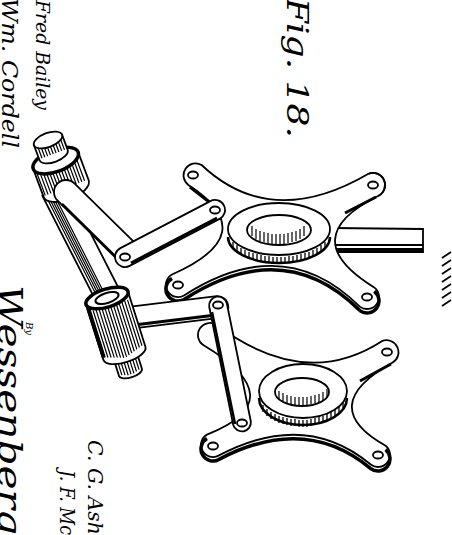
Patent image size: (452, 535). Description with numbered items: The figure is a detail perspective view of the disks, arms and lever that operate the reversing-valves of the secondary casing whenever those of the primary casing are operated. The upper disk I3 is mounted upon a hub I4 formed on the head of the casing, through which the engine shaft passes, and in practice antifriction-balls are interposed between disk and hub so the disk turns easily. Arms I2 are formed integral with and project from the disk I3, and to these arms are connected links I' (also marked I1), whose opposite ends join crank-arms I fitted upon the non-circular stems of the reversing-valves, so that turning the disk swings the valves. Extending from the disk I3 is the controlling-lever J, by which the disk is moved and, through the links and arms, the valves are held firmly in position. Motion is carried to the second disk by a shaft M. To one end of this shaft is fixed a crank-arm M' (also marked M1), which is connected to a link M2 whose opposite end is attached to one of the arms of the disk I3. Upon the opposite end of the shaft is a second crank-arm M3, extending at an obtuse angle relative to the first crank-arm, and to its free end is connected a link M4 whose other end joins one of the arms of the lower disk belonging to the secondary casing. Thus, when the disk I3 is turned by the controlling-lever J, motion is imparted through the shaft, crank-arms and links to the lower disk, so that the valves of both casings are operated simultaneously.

The shaft M is at (88, 254).
The crank-arm M' is at (96, 220).
The crank-arm M1 is at (124, 248).
The link M2 is at (182, 222).
The second crank-arm M3 is at (167, 325).
The link M4 is at (222, 350).
The crank-arm I is at (275, 228).
The link I' is at (275, 228).
The link I1 is at (275, 228).
The arm I2 is at (355, 190).
The disk I3 is at (271, 210).
The hub I4 is at (305, 412).
The controlling-lever J is at (403, 233).